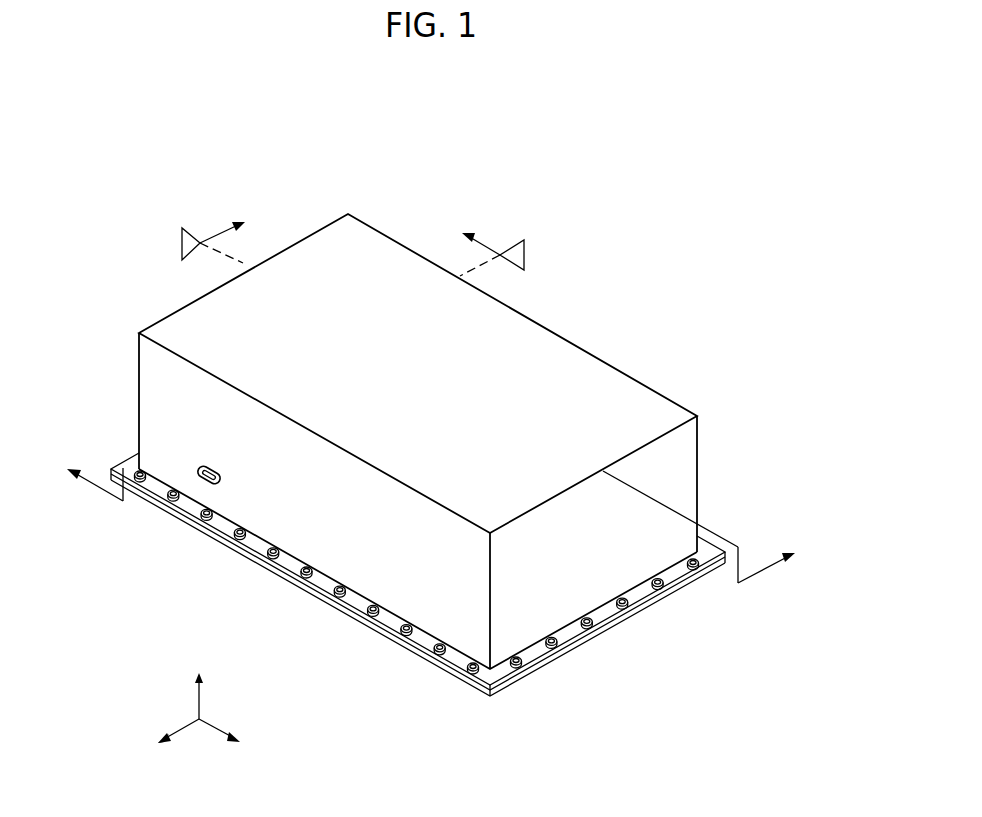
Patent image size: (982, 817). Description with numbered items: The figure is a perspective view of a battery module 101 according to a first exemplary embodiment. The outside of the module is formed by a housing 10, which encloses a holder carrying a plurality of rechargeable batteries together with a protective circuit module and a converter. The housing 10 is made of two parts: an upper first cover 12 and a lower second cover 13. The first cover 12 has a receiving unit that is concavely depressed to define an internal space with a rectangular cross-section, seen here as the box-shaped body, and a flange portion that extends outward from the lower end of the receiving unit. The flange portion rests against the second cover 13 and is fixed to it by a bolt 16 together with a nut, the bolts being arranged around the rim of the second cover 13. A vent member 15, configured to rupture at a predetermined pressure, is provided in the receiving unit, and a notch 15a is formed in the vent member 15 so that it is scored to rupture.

The battery module 101 is at (621, 289).
The housing 10 is at (752, 440).
The first cover 12 is at (698, 453).
The second cover 13 is at (730, 548).
The vent member 15 is at (197, 486).
The notch 15a is at (207, 480).
The bolt 16 is at (263, 560).